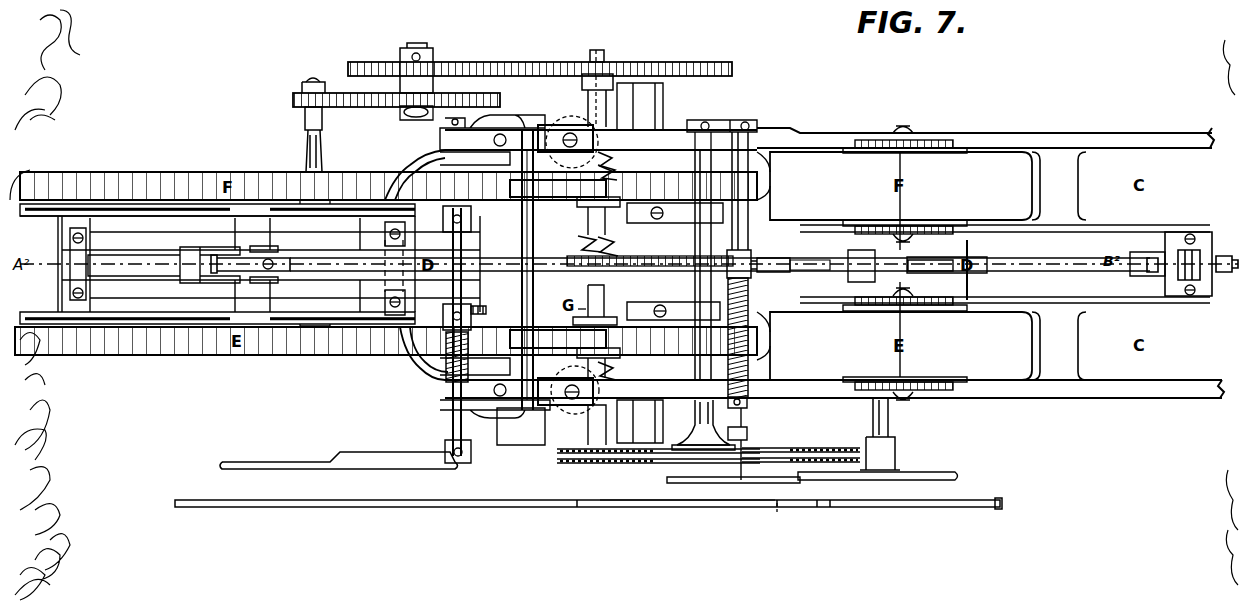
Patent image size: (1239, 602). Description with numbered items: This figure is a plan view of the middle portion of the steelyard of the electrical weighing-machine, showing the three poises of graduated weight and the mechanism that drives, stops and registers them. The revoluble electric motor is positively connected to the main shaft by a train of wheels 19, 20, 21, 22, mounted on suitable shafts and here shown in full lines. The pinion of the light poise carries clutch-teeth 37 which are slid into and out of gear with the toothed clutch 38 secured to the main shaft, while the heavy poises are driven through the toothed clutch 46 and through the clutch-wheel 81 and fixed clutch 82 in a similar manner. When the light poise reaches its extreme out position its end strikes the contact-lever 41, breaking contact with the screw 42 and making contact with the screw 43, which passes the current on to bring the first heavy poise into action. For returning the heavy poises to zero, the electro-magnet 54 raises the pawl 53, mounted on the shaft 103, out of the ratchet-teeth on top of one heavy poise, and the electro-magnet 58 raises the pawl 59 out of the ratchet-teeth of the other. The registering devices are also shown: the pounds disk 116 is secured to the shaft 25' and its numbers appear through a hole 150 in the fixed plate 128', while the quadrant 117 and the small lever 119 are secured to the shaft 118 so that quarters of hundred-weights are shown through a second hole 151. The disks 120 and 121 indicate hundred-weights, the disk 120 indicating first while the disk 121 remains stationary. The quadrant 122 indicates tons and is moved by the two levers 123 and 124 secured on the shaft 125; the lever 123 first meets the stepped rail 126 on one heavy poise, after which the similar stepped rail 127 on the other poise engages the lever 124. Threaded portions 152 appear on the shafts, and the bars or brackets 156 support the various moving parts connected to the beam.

The wheel of motor train 19 is at (293, 103).
The wheel of motor train 20 is at (392, 107).
The wheel of motor train 21 is at (443, 64).
The wheel of motor train 22 is at (530, 62).
The shaft 25' is at (888, 434).
The clutch-teeth 37 is at (620, 253).
The toothed clutch 38 is at (620, 240).
The contact-lever 41 is at (1186, 281).
The screw 42 is at (1152, 257).
The screw 43 is at (1218, 273).
The toothed clutch 46 is at (617, 378).
The pawl 53 is at (565, 206).
The electro-magnet 54 is at (568, 142).
The electro-magnet 58 is at (572, 405).
The pawl 59 is at (565, 353).
The clutch-wheel 81 is at (618, 177).
The fixed clutch 82 is at (616, 160).
The shaft 103 is at (532, 237).
The disk 116 is at (917, 480).
The quadrant 117 is at (756, 483).
The shaft 118 is at (751, 252).
The small lever 119 is at (760, 260).
The disk 120 is at (778, 452).
The disk 121 is at (620, 462).
The quadrant 122 is at (350, 467).
The lever 123 is at (465, 306).
The lever 124 is at (466, 220).
The shaft 125 is at (452, 242).
The stepped rail 126 is at (448, 310).
The stepped rail 127 is at (210, 217).
The fixed plate 128' is at (687, 514).
The hole 150 is at (826, 509).
The hole 151 is at (778, 272).
The threaded portion 152 is at (749, 302).
The bars or brackets 156 is at (514, 124).